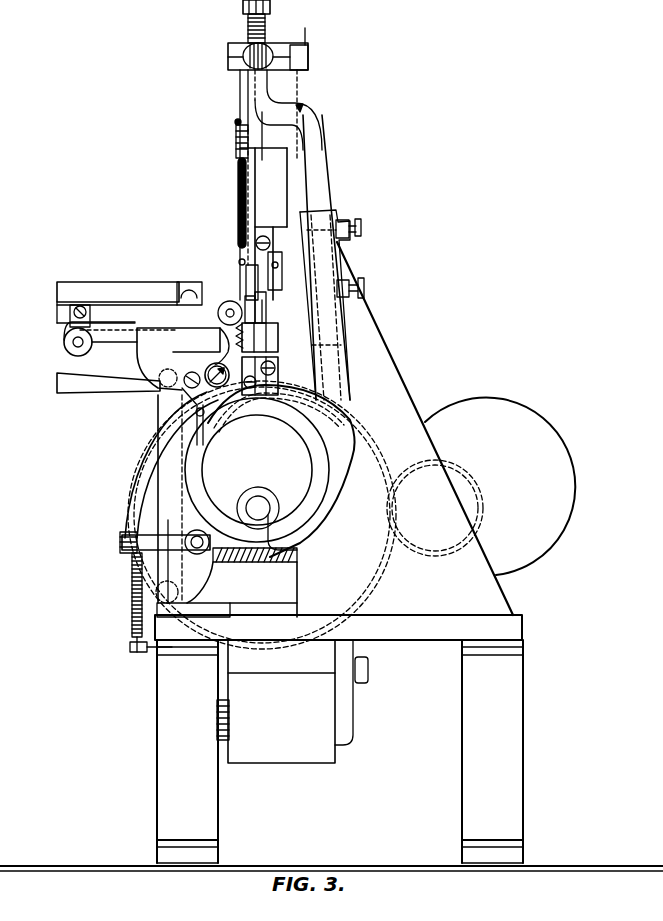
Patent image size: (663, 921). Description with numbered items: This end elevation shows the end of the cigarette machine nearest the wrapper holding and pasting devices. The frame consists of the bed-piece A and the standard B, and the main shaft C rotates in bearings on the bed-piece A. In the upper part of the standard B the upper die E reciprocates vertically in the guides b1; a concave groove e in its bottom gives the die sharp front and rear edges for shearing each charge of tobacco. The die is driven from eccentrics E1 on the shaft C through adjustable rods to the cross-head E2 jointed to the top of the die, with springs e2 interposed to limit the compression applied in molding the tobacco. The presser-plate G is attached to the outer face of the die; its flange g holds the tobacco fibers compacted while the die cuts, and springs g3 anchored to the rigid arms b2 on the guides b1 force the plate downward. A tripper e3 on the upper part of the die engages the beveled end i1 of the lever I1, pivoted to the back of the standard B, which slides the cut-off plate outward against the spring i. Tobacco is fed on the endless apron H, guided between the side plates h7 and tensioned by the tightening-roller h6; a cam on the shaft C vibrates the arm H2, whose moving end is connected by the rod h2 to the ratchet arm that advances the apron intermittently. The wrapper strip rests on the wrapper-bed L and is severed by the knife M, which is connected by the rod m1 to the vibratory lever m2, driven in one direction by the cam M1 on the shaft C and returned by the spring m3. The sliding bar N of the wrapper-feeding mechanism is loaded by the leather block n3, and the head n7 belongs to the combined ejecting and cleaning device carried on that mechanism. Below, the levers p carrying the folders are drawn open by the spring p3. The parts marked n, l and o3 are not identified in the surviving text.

The bed-piece A is at (331, 556).
The adjusting knob o3 is at (279, 697).
The springs e2 is at (250, 21).
The cross-head E2 is at (240, 58).
The tripper e3 is at (307, 49).
The spring i is at (285, 115).
The beveled end of lever i1 is at (302, 107).
The upper die E is at (271, 136).
The lever I1 is at (306, 148).
The concave groove e is at (332, 305).
The standard B is at (263, 224).
The presser-plate G is at (238, 140).
The flange g is at (236, 122).
The guides b1 is at (246, 156).
The springs g3 is at (238, 208).
The rigid arms b2 is at (239, 262).
The rod l is at (252, 278).
The screw / hub n is at (281, 275).
The block n3 is at (280, 309).
The sliding bar N is at (279, 336).
The wrapper-bed L is at (279, 369).
The endless apron H is at (57, 298).
The side plates h7 is at (140, 293).
The tightening-roller h6 is at (64, 343).
The rod h2 is at (108, 383).
The head n7 is at (222, 315).
The knife M is at (213, 345).
The eccentrics E1 is at (262, 515).
The main shaft C is at (258, 508).
The cam M1 is at (282, 532).
The spring p3 is at (227, 582).
The levers p is at (198, 419).
The arm H2 is at (169, 499).
The rod m1 is at (153, 445).
The vibratory lever m2 is at (165, 536).
The spring m3 is at (146, 602).